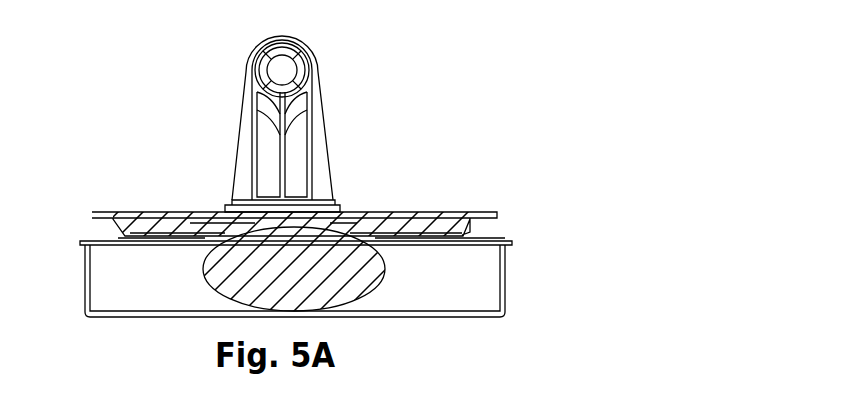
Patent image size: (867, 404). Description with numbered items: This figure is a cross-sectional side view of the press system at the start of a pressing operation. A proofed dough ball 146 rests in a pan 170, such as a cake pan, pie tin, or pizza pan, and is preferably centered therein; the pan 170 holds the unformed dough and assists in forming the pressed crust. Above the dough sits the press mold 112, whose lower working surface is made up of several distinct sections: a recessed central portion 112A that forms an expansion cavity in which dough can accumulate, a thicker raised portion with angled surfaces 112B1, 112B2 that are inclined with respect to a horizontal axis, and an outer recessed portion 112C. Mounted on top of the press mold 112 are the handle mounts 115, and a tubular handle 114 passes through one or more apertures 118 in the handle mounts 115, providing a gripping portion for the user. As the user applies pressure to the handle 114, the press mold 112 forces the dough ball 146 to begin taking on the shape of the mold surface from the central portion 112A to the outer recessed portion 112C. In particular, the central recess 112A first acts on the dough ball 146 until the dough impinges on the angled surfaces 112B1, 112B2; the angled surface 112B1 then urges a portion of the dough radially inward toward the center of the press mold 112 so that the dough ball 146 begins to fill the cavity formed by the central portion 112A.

The press mold 112 is at (110, 212).
The recessed central portion 112A is at (332, 212).
The angled surface 112B1 is at (418, 212).
The angled surface 112B2 is at (455, 232).
The recessed portion 112C is at (505, 233).
The handle 114 is at (298, 56).
The handle mounts 115 is at (313, 150).
The apertures 118 is at (303, 82).
The dough ball 146 is at (233, 287).
The pan 170 is at (505, 284).